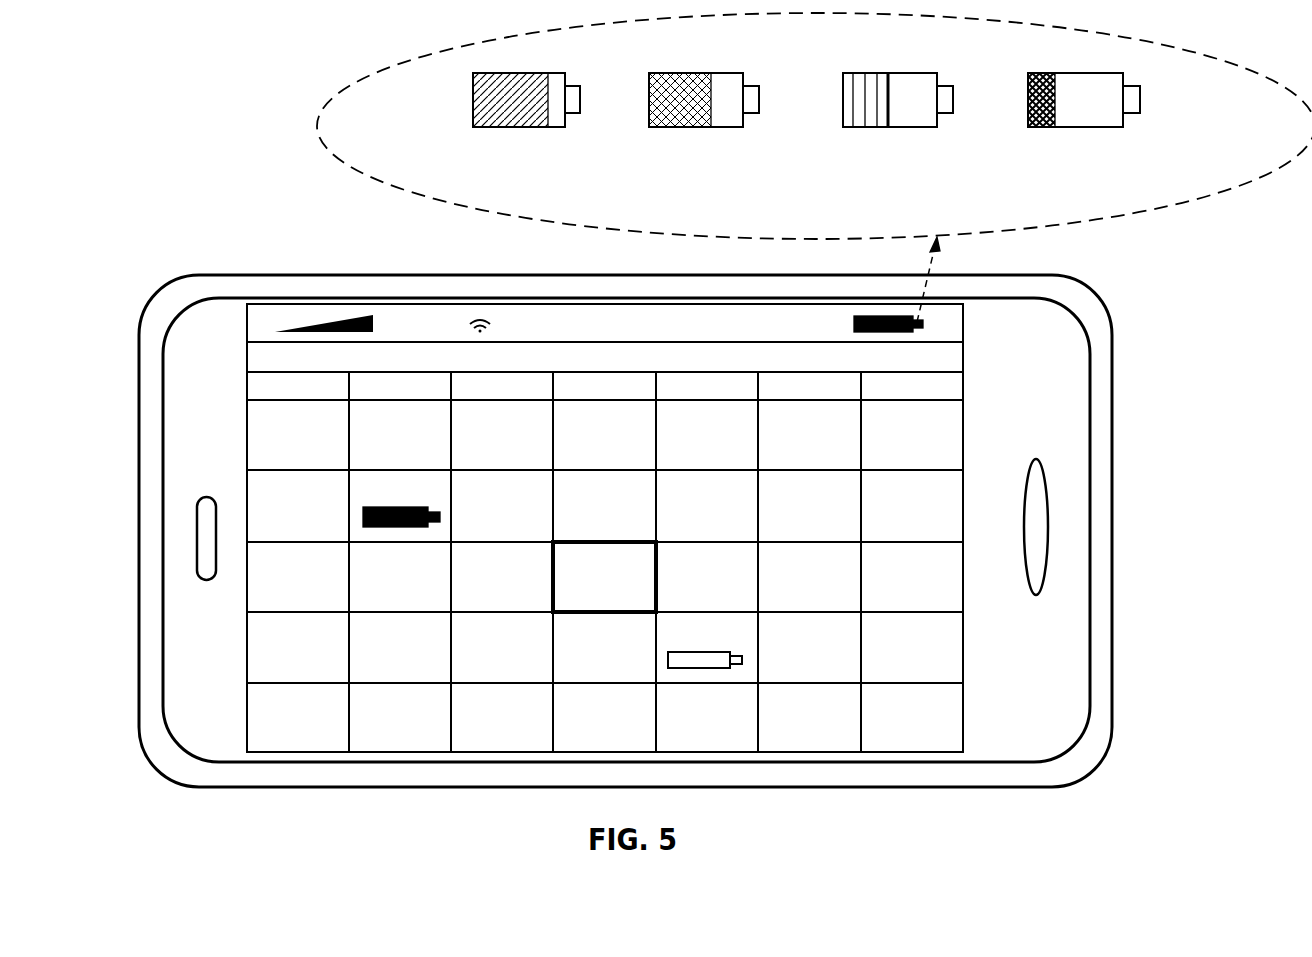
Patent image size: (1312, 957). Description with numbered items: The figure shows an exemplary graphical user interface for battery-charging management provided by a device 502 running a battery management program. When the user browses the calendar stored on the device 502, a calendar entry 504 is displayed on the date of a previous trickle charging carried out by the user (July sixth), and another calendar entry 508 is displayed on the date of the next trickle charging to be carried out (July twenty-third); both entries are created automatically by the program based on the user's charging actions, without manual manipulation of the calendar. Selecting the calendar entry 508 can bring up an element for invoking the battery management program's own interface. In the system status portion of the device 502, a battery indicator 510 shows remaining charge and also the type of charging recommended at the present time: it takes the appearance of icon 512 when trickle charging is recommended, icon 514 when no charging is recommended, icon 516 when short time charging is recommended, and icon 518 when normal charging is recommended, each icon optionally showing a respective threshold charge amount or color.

The device 502 is at (1112, 396).
The calendar entry 504 is at (397, 507).
The calendar entry 508 is at (963, 372).
The battery indicator 510 is at (925, 322).
The icon 512 is at (582, 90).
The icon 514 is at (759, 88).
The icon 516 is at (953, 88).
The icon 518 is at (1133, 109).